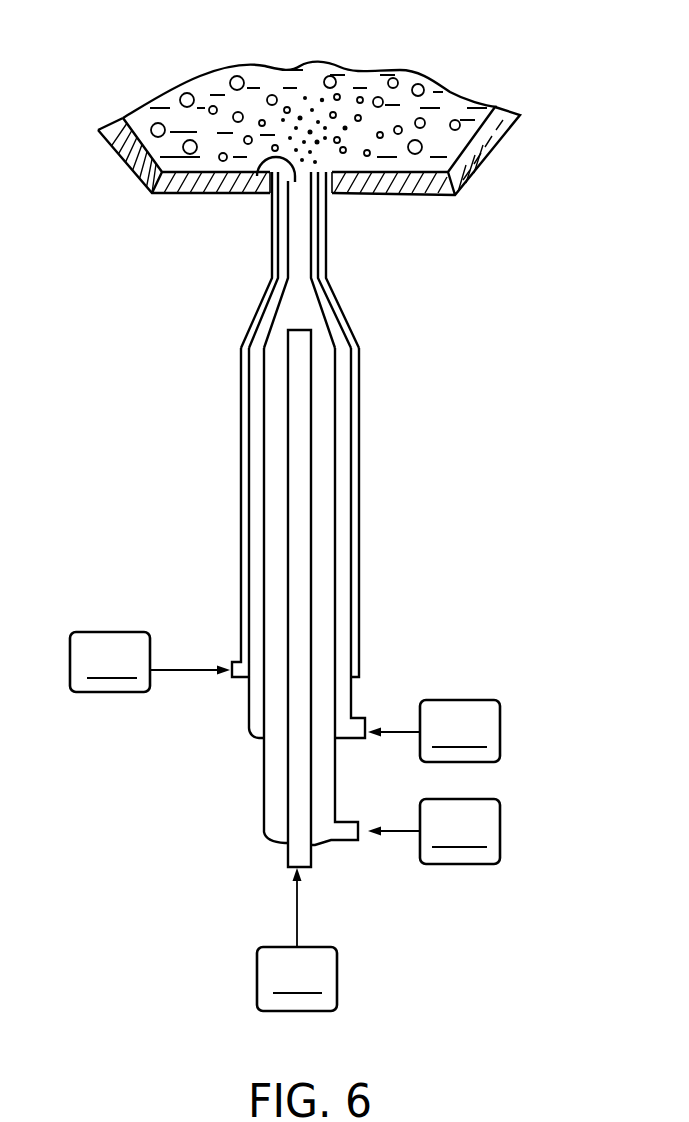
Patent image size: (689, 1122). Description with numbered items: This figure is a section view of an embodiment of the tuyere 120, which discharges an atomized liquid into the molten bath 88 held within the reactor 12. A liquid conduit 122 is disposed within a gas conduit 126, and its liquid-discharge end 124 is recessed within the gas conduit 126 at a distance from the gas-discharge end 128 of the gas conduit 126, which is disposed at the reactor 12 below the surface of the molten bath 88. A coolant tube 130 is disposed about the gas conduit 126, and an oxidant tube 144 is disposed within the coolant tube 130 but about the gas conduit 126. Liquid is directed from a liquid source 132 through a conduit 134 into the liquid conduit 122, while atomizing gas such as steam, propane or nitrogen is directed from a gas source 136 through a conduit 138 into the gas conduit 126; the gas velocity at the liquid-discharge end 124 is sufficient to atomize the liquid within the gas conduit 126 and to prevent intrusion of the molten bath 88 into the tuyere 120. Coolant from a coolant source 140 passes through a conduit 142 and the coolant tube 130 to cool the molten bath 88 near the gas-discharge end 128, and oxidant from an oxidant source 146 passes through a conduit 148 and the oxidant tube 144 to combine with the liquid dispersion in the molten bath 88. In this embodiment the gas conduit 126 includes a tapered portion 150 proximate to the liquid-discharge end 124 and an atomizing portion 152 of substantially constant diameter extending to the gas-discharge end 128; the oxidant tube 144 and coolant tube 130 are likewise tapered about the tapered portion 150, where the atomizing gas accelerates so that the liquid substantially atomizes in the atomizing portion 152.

The reactor 12 is at (482, 162).
The molten bath 88 is at (212, 88).
The tuyere 120 is at (232, 448).
The liquid conduit 122 is at (287, 542).
The liquid-discharge end 124 is at (293, 329).
The gas conduit 126 is at (337, 442).
The gas-discharge end 128 is at (255, 173).
The coolant tube 130 is at (360, 542).
The liquid source 132 is at (297, 979).
The conduit 134 is at (292, 909).
The gas source 136 is at (460, 831).
The conduit 138 is at (398, 835).
The coolant source 140 is at (110, 662).
The conduit 142 is at (188, 674).
The oxidant tube 144 is at (353, 497).
The oxidant source 146 is at (460, 731).
The conduit 148 is at (401, 727).
The tapered portion 150 is at (280, 297).
The atomizing portion 152 is at (312, 230).